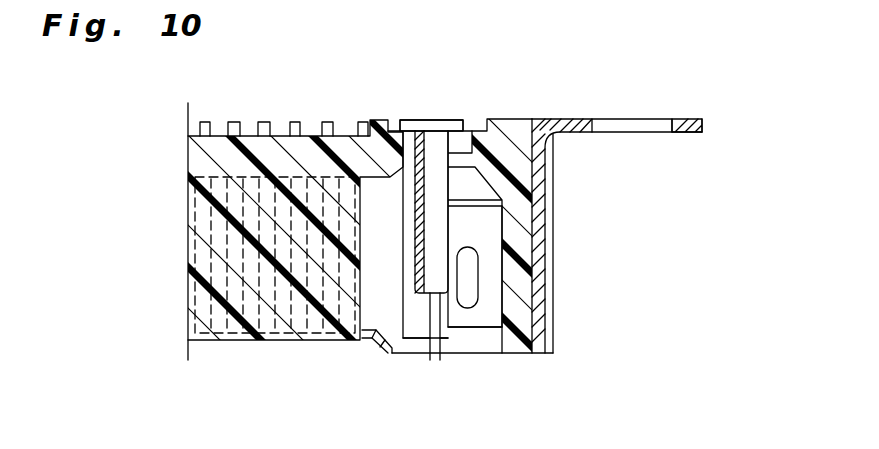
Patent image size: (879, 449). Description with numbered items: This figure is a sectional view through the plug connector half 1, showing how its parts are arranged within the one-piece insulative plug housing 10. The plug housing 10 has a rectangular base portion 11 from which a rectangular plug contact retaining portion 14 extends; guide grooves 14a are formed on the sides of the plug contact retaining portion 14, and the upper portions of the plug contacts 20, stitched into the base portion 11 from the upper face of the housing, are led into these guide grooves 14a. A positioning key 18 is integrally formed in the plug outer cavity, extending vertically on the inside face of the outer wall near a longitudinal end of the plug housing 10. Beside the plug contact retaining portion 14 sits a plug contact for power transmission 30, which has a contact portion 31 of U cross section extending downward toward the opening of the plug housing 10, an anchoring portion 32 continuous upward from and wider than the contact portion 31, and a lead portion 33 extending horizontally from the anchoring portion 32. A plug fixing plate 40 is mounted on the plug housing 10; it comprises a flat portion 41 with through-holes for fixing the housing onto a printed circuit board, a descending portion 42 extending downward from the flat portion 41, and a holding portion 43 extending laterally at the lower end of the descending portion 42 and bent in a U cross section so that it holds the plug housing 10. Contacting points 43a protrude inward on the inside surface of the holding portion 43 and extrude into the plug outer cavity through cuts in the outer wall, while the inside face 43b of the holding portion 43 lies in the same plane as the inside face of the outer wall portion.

The plug connector half 1 is at (662, 247).
The plug housing 10 is at (560, 337).
The base portion 11 is at (282, 136).
The plug contact retaining portion 14 is at (270, 330).
The guide grooves 14a is at (338, 300).
The positioning key 18 is at (383, 356).
The plug contacts 20 is at (208, 128).
The plug contact for power transmission 30 is at (418, 335).
The contact portion 31 is at (553, 219).
The anchoring portion 32 is at (465, 135).
The lead portion 33 is at (412, 125).
The plug fixing plate 40 is at (685, 122).
The flat portion 41 is at (578, 118).
The descending portion 42 is at (553, 252).
The holding portion 43 is at (458, 330).
The contacting points 43a is at (467, 303).
The inside face 43b is at (487, 315).